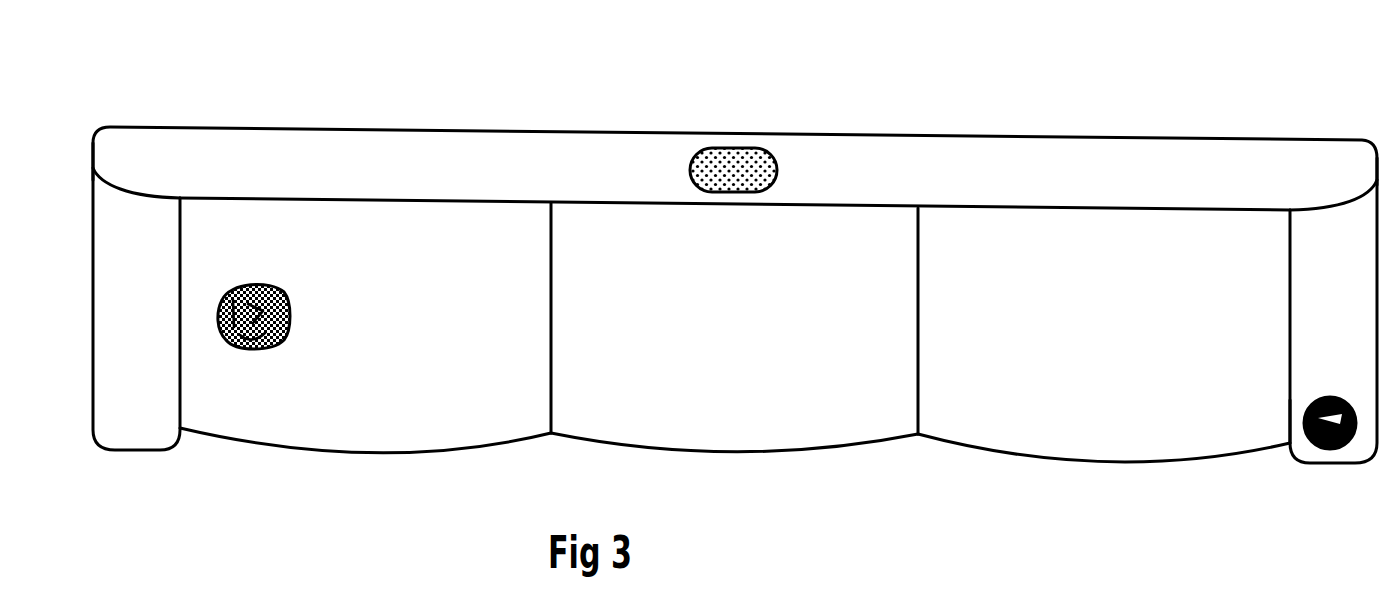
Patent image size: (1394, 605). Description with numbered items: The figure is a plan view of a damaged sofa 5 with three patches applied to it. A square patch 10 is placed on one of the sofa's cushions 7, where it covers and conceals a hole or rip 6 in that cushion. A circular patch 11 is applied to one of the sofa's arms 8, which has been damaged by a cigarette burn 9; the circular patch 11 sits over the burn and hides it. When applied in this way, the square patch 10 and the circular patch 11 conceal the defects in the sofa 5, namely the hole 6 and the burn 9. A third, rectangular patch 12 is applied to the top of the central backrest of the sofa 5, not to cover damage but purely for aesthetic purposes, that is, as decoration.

The sofa 5 is at (1011, 168).
The hole or rip 6 is at (288, 293).
The cushion 7 is at (338, 387).
The arm 8 is at (1330, 307).
The cigarette burn 9 is at (1287, 418).
The square patch 10 is at (243, 285).
The circular patch 11 is at (1320, 393).
The rectangular patch 12 is at (735, 177).